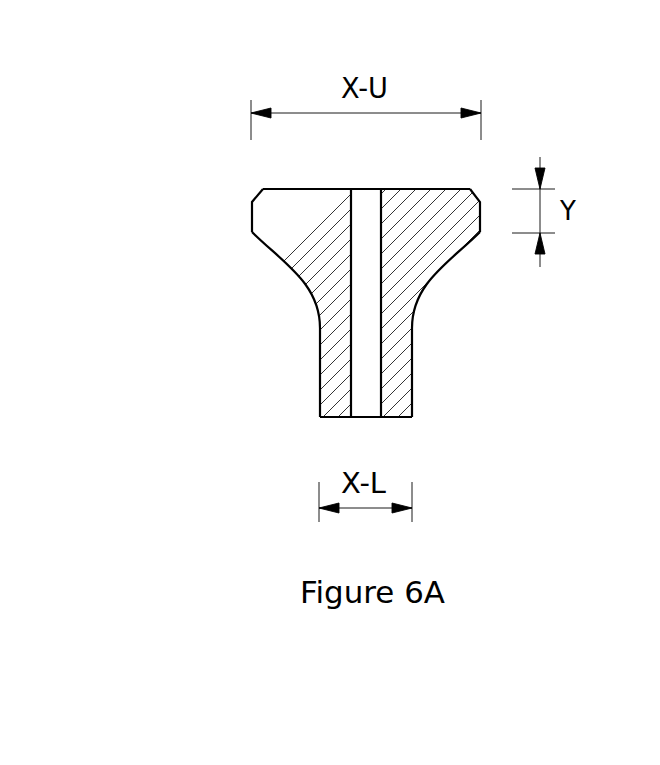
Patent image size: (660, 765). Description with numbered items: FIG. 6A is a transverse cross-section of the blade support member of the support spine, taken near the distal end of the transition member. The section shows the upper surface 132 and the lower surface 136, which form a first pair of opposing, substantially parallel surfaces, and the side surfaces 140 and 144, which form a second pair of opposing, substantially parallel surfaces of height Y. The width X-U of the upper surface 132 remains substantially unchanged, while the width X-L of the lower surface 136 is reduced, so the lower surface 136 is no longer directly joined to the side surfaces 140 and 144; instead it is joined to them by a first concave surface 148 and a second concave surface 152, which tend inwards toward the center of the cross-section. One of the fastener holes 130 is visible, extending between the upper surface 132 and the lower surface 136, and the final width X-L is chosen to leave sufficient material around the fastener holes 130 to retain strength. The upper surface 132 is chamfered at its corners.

The fastener hole 130 is at (370, 390).
The upper surface 132 is at (303, 188).
The lower surface 136 is at (345, 418).
The side surface 140 is at (252, 230).
The side surface 144 is at (482, 215).
The first concave surface 148 is at (313, 292).
The second concave surface 152 is at (414, 316).